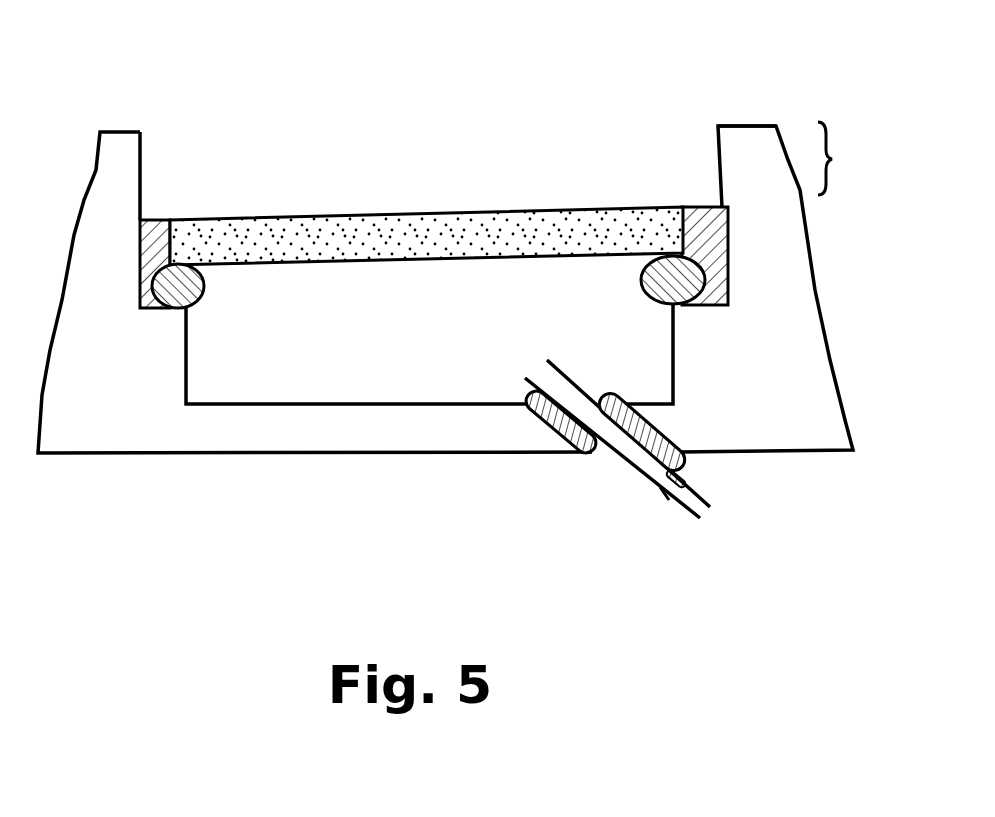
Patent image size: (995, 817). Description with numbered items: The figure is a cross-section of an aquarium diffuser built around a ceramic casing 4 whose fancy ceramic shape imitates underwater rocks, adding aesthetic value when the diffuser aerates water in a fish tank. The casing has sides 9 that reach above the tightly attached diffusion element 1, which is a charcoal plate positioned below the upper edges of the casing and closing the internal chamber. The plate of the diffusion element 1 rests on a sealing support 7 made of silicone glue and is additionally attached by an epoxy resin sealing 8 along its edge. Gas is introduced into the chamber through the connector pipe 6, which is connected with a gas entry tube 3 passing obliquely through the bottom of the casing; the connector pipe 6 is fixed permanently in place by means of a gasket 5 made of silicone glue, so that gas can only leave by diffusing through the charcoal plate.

The diffusion element 1 is at (403, 228).
The tube 3 is at (697, 495).
The ceramic casing 4 is at (122, 142).
The gasket 5 is at (587, 455).
The connector pipe 6 is at (632, 470).
The sealing support 7 is at (165, 305).
The epoxy resin sealing 8 is at (695, 210).
The sides 9 is at (795, 158).